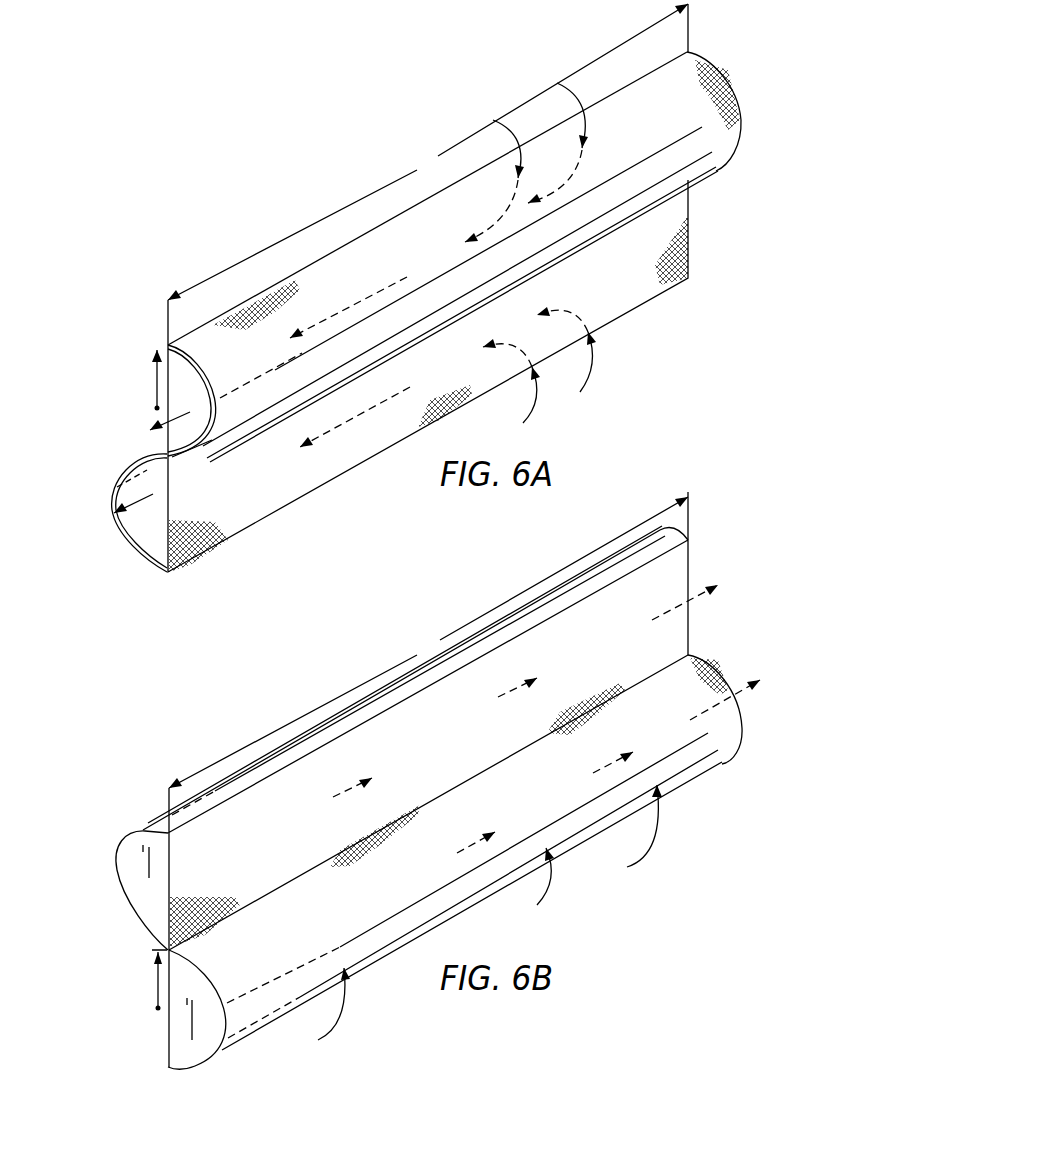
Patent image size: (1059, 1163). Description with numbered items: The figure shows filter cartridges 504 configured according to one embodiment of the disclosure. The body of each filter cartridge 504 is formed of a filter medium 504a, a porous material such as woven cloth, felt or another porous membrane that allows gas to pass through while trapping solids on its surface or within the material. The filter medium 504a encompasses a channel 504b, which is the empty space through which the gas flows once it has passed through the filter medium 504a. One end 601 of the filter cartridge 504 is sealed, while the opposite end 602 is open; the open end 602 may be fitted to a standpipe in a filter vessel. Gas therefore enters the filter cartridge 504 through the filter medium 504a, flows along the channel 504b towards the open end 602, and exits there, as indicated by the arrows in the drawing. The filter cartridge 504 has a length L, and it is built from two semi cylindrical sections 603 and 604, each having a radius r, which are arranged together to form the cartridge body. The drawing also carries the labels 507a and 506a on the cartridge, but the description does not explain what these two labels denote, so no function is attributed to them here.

In FIG. 6A, the filter cartridge 504 is at (705, 36).
In FIG. 6B, the filter cartridge 504 is at (704, 804).
In FIG. 6A, the filter medium 504a is at (633, 283).
In FIG. 6A, the channel 504b is at (130, 527).
In FIG. 6A, the edge region 507a is at (168, 343).
In FIG. 6B, the edge region 507a is at (227, 868).
In FIG. 6A, the end 601 is at (732, 89).
In FIG. 6B, the end 601 is at (197, 1043).
In FIG. 6A, the end 602 is at (200, 459).
In FIG. 6B, the end 602 is at (744, 715).
In FIG. 6A, the semi cylindrical section 603 is at (122, 343).
In FIG. 6A, the semi cylindrical section 604 is at (118, 450).
In FIG. 6A, the plate face 506a is at (296, 470).